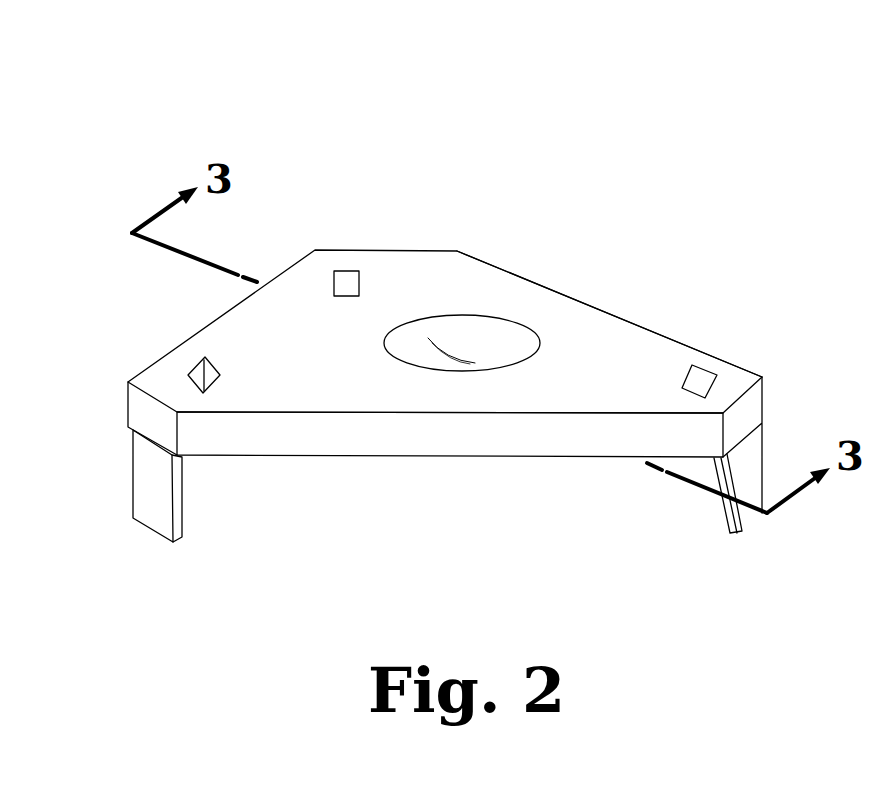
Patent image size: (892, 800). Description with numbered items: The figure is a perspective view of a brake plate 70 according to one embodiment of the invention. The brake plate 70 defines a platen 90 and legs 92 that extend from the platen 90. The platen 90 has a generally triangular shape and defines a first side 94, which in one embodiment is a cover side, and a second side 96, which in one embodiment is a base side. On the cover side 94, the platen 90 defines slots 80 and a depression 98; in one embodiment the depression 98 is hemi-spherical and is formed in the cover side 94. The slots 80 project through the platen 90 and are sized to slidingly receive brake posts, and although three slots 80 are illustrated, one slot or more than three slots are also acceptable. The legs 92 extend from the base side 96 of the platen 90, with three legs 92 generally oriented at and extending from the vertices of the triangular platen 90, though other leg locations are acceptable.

The brake plate 70 is at (655, 140).
The slots 80 is at (347, 277).
The platen 90 is at (500, 295).
The legs 92 is at (142, 497).
The first side 94 is at (572, 340).
The second side 96 is at (477, 457).
The depression 98 is at (445, 328).